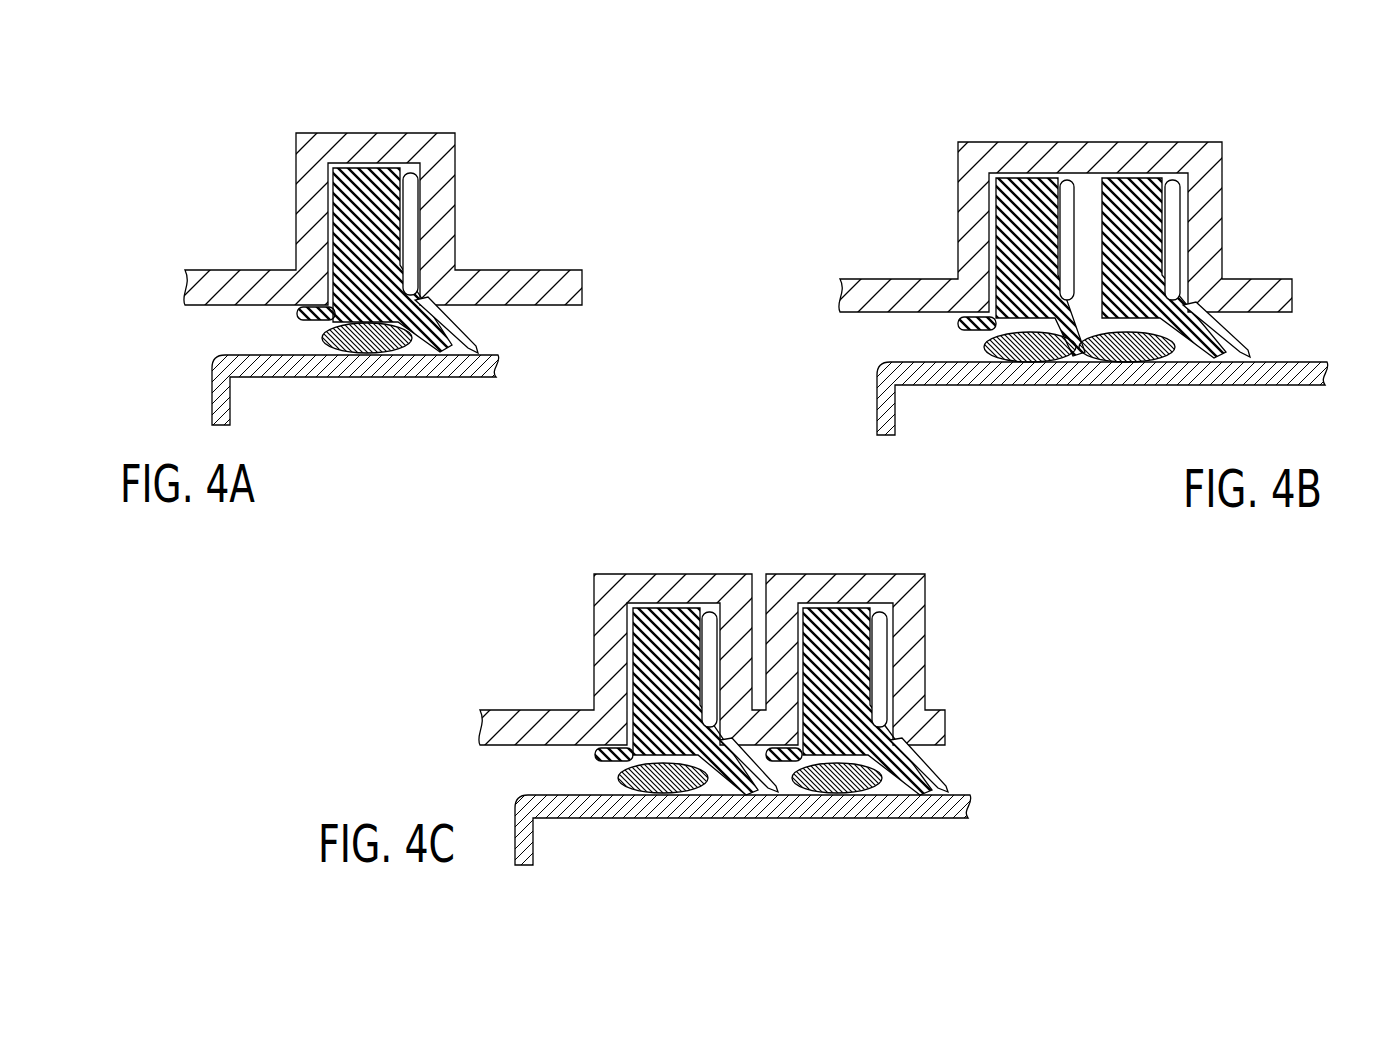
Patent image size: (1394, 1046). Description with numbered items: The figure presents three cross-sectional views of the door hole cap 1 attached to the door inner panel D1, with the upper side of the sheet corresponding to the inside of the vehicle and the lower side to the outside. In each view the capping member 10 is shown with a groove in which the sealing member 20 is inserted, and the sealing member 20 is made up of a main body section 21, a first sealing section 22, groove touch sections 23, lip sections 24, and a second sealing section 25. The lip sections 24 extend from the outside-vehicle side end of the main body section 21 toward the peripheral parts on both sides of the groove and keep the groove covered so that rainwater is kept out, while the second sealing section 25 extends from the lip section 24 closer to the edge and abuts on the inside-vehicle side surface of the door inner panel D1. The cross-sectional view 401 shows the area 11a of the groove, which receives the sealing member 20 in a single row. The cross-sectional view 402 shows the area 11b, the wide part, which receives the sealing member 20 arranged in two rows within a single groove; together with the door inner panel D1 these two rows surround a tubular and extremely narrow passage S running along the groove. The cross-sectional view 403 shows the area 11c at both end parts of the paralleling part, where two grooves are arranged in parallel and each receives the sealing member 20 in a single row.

In FIG. 4A, the door hole cap 1 is at (585, 363).
In FIG. 4B, the door hole cap 1 is at (1313, 288).
In FIG. 4C, the door hole cap 1 is at (1013, 793).
In FIG. 4A, the capping member 10 is at (220, 287).
In FIG. 4B, the capping member 10 is at (895, 290).
In FIG. 4C, the capping member 10 is at (525, 720).
In FIG. 4A, the area of the groove 11a is at (332, 147).
In FIG. 4B, the area of the groove 11b is at (1118, 157).
In FIG. 4C, the area of the groove 11c is at (720, 592).
In FIG. 4A, the sealing member 20 is at (378, 183).
In FIG. 4B, the sealing member 20 is at (1045, 172).
In FIG. 4C, the sealing member 20 is at (678, 608).
In FIG. 4A, the main body section 21 is at (357, 183).
In FIG. 4B, the main body section 21 is at (1000, 190).
In FIG. 4C, the main body section 21 is at (640, 628).
In FIG. 4A, the first sealing section 22 is at (436, 355).
In FIG. 4B, the first sealing section 22 is at (1040, 363).
In FIG. 4C, the first sealing section 22 is at (845, 796).
In FIG. 4A, the groove touch section 23 is at (410, 247).
In FIG. 4B, the groove touch section 23 is at (1182, 198).
In FIG. 4C, the groove touch section 23 is at (862, 694).
In FIG. 4A, the lip section 24 is at (297, 312).
In FIG. 4B, the lip section 24 is at (958, 322).
In FIG. 4C, the lip section 24 is at (595, 754).
In FIG. 4A, the second sealing section 25 is at (445, 343).
In FIG. 4B, the second sealing section 25 is at (1200, 345).
In FIG. 4C, the second sealing section 25 is at (920, 775).
In FIG. 4A, the cross-sectional view 401 is at (174, 72).
In FIG. 4B, the cross-sectional view 402 is at (831, 68).
In FIG. 4C, the cross-sectional view 403 is at (470, 509).
In FIG. 4A, the door inner panel D1 is at (283, 378).
In FIG. 4B, the door inner panel D1 is at (945, 385).
In FIG. 4C, the door inner panel D1 is at (583, 818).
In FIG. 4B, the passage S is at (1077, 362).